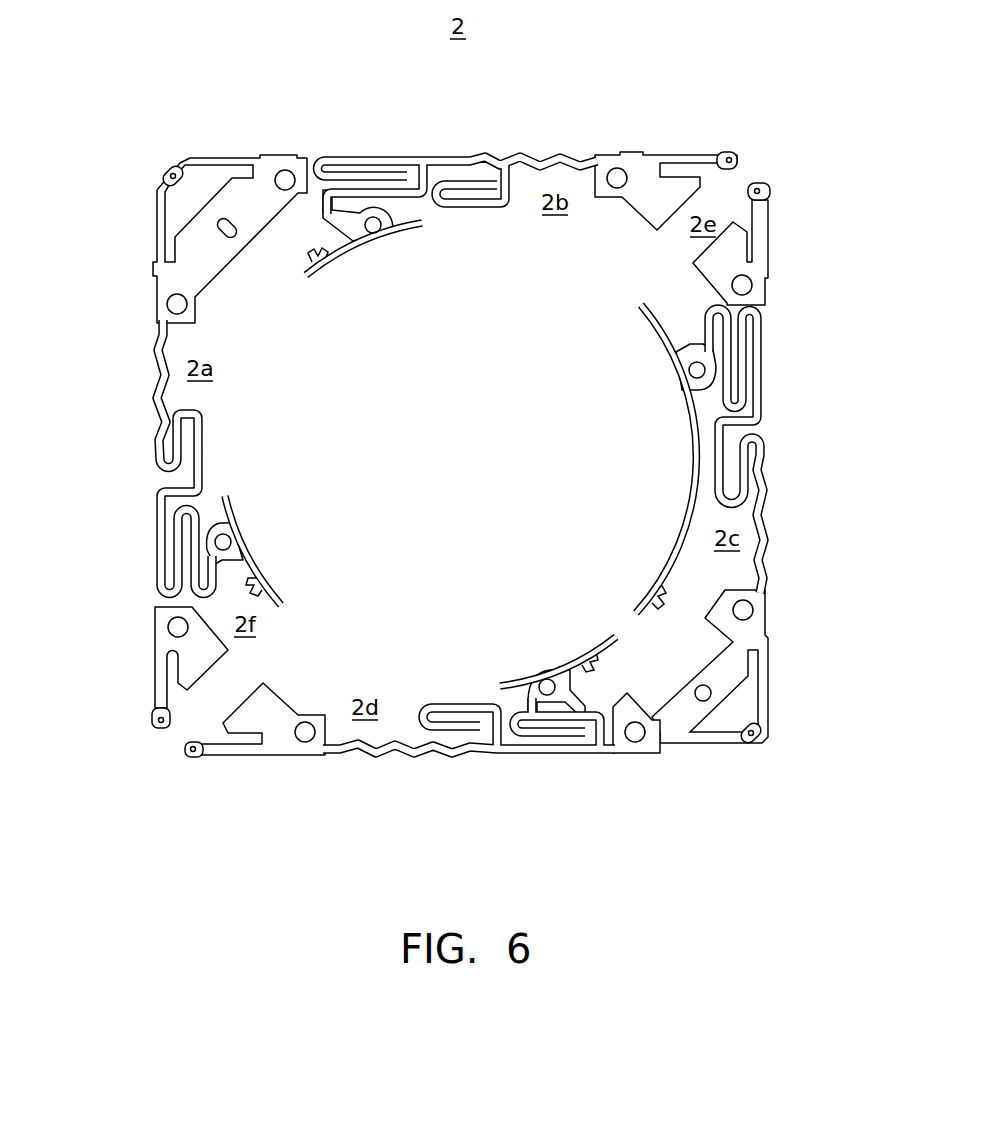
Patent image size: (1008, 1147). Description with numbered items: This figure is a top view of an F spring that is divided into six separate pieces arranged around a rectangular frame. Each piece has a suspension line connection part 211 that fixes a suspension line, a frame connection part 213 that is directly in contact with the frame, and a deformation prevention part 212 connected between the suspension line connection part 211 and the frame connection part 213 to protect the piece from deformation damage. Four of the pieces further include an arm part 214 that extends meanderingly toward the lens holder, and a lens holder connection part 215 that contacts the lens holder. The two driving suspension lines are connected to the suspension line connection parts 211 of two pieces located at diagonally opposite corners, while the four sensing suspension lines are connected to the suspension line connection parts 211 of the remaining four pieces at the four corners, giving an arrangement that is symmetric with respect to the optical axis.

The suspension line connection part 211 is at (770, 797).
The deformation prevention part 212 is at (228, 158).
The frame connection part 213 is at (285, 178).
The arm part 214 is at (470, 160).
The lens holder connection part 215 is at (373, 222).